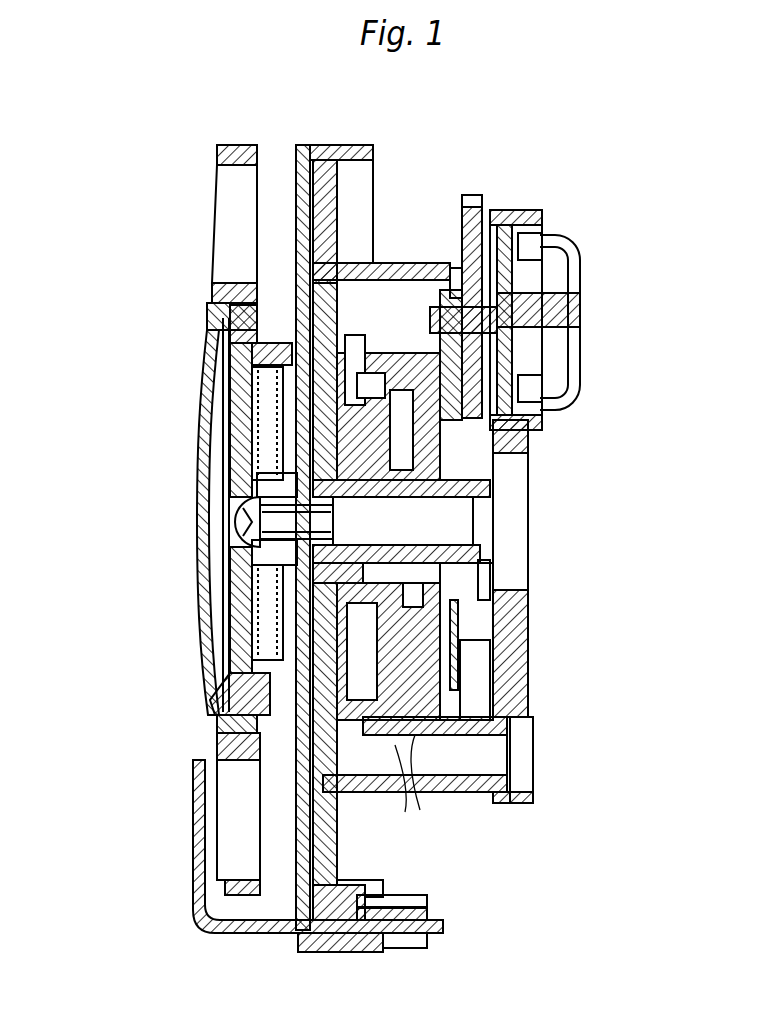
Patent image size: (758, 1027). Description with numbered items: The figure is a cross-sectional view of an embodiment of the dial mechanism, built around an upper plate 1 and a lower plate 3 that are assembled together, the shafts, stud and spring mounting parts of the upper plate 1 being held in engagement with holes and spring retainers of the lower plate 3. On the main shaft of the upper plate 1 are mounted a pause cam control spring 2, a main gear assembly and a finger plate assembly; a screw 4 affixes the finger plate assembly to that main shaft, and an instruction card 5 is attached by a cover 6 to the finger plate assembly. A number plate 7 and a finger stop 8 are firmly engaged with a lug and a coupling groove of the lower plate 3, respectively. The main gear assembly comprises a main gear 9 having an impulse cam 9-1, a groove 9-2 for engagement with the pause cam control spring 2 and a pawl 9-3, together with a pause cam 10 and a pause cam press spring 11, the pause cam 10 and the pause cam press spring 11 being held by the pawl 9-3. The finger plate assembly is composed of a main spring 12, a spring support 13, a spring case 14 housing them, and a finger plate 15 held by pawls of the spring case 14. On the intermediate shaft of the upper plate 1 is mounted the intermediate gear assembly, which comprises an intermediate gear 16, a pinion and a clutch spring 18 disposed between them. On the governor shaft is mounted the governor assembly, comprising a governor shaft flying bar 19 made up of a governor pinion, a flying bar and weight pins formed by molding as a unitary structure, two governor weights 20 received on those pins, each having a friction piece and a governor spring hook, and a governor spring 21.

The upper plate 1 is at (520, 640).
The pause cam control spring 2 is at (497, 468).
The lower plate 3 is at (343, 148).
The screw 4 is at (238, 518).
The instruction card 5 is at (222, 578).
The cover 6 is at (203, 618).
The number plate 7 is at (296, 170).
The finger stop 8 is at (245, 933).
The main gear 9 is at (430, 838).
The impulse cam 9-1 is at (465, 740).
The groove 9-2 is at (478, 672).
The pawl 9-3 is at (482, 595).
The pause cam 10 is at (500, 702).
The pause cam press spring 11 is at (458, 622).
The main spring 12 is at (255, 433).
The spring support 13 is at (256, 482).
The spring case 14 is at (230, 668).
The finger plate 15 is at (217, 155).
The intermediate gear 16 is at (462, 215).
The clutch spring 18 is at (455, 278).
The governor shaft flying bar 19 is at (517, 230).
The governor weight 20 is at (527, 290).
The governor spring 21 is at (557, 275).